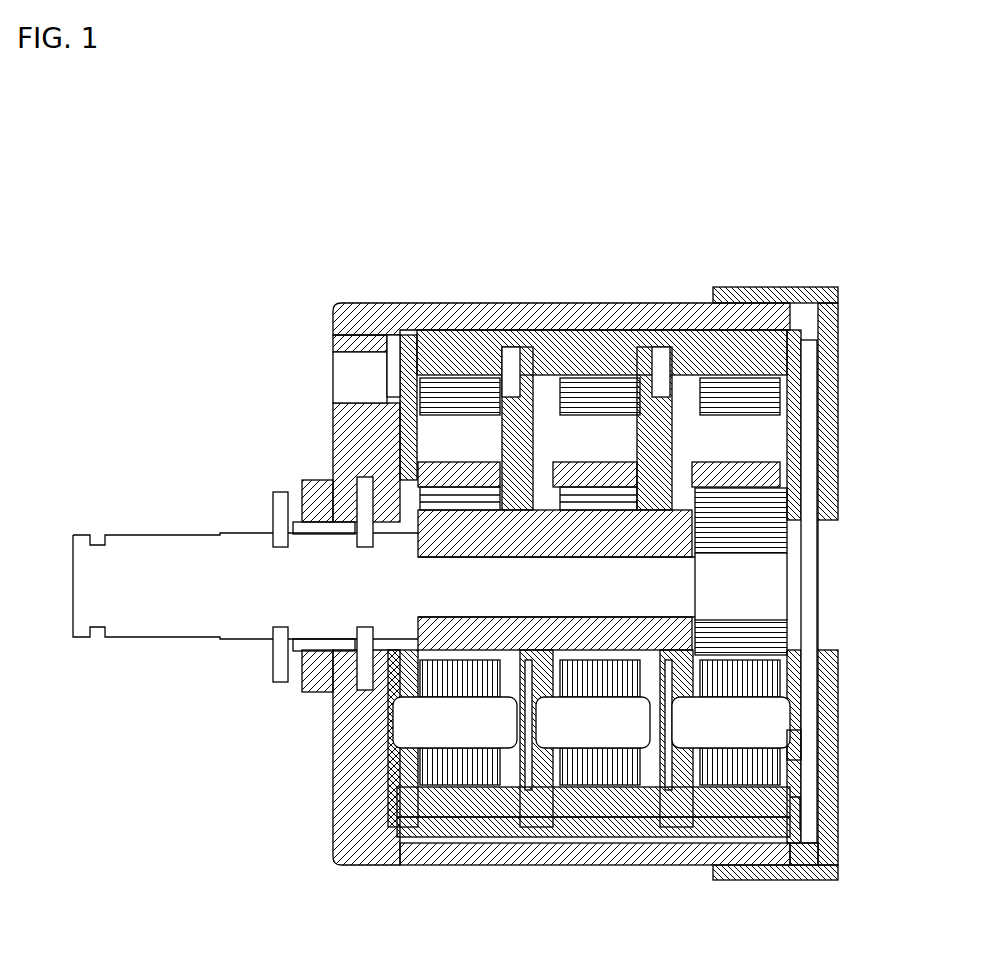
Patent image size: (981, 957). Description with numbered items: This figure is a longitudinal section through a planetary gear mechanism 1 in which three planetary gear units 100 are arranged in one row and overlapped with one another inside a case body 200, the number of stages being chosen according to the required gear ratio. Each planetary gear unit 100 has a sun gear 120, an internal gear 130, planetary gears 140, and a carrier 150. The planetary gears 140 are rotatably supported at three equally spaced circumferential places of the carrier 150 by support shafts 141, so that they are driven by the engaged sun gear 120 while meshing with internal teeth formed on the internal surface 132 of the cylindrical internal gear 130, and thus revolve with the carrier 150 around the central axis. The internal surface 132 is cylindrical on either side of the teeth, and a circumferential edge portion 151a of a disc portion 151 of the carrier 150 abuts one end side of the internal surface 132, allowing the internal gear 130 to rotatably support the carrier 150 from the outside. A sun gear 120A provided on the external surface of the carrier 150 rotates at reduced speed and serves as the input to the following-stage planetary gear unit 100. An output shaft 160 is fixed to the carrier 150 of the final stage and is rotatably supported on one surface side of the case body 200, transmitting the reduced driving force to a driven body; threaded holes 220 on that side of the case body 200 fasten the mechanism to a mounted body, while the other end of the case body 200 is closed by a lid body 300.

The planetary gear mechanism 1 is at (168, 250).
The planetary gear unit 100 is at (443, 324).
The sun gear 120 is at (772, 548).
The sun gear 120A is at (302, 690).
The internal gear 130 is at (480, 800).
The internal surface 132 is at (796, 818).
The planetary gear 140 is at (400, 800).
The support shaft 141 is at (420, 730).
The carrier 150 is at (538, 333).
The disc portion 151 is at (800, 752).
The circumferential edge portion 151a is at (815, 862).
The output shaft 160 is at (178, 548).
The case body 200 is at (388, 303).
The threaded hole 220 is at (355, 388).
The lid body 300 is at (838, 290).